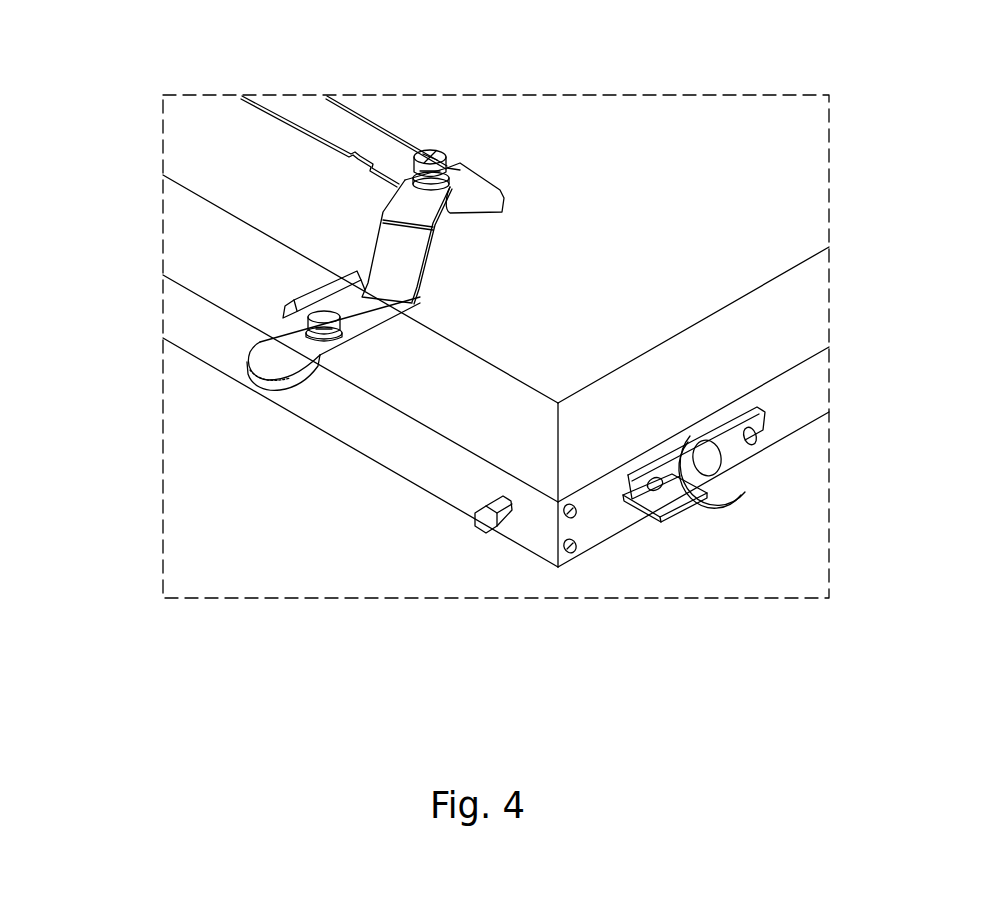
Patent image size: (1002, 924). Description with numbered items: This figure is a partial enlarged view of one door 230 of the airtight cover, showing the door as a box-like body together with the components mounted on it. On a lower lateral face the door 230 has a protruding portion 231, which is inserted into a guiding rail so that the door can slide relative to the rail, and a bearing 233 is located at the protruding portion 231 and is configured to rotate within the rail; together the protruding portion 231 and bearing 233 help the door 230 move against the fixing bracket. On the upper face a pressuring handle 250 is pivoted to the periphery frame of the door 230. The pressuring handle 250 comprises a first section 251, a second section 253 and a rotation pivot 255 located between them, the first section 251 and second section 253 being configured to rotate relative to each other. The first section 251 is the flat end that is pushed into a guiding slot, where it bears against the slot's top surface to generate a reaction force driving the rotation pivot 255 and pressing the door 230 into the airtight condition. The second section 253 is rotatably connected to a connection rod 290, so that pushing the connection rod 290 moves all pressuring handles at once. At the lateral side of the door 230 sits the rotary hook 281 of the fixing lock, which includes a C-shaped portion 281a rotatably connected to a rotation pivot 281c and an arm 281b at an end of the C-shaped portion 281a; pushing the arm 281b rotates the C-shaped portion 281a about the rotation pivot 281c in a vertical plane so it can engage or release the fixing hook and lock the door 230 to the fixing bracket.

The door 230 is at (496, 434).
The protruding portion 231 is at (466, 531).
The bearing 233 is at (490, 500).
The pressuring handle 250 is at (292, 203).
The first section 251 is at (260, 360).
The second section 253 is at (405, 202).
The rotation pivot 255 is at (358, 243).
The rotary hook 281 is at (804, 484).
The C-shaped portion 281a is at (733, 476).
The arm 281b is at (663, 503).
The rotation pivot 281c is at (712, 452).
The connection rod 290 is at (297, 108).